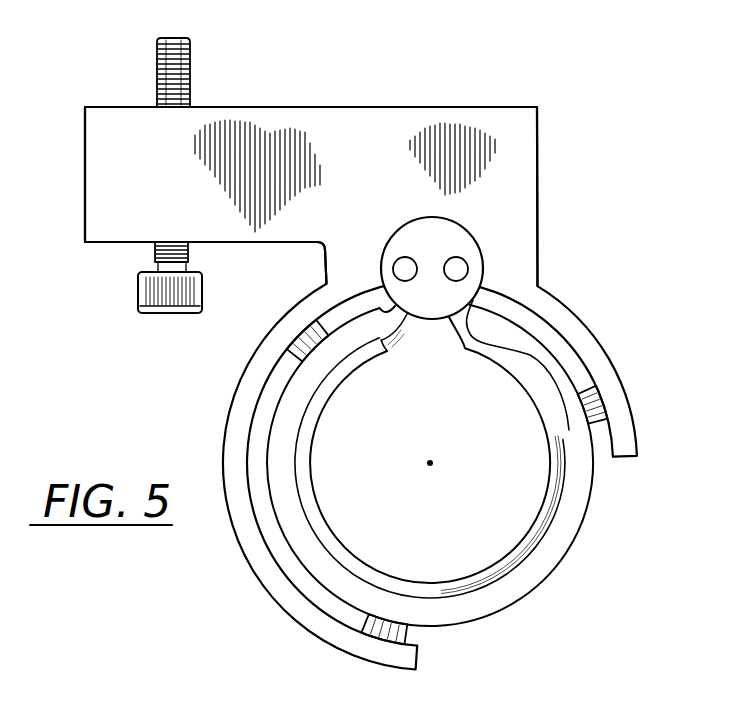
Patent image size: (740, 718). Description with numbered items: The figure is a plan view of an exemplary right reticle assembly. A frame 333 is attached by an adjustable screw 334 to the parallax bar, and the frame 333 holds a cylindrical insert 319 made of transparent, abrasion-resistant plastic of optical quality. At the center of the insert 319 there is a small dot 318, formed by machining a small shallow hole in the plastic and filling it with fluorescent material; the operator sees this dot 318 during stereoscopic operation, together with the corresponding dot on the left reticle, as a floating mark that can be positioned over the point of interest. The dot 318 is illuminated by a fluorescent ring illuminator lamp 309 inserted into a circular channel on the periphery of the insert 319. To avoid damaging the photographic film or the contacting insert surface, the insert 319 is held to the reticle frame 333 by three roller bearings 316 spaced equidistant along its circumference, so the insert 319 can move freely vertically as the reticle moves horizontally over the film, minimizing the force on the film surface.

The fluorescent ring illuminator lamp 309 is at (458, 592).
The roller bearing 316 is at (323, 332).
The dot 318 is at (430, 464).
The insert 319 is at (572, 522).
The frame 333 is at (362, 108).
The adjustable screw 334 is at (173, 298).